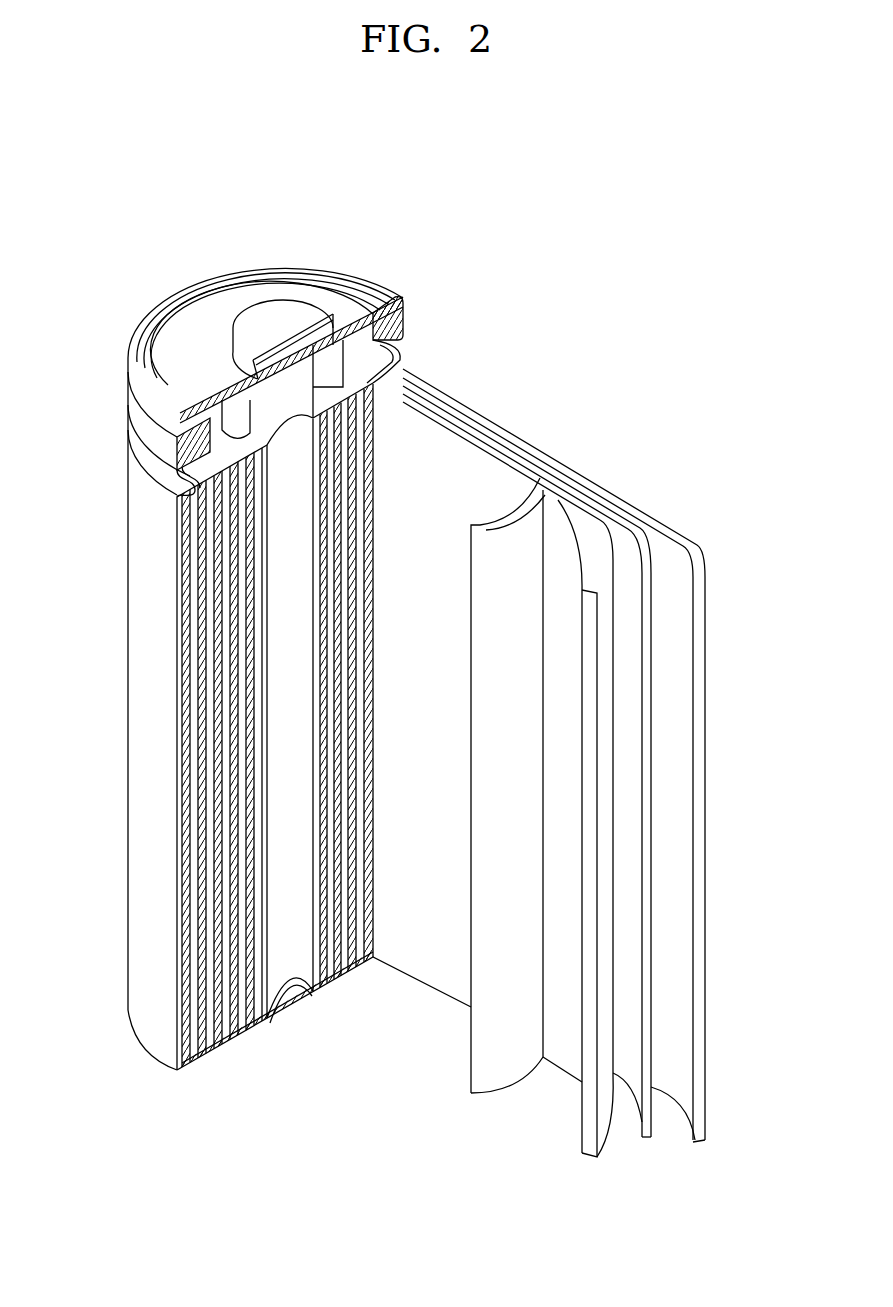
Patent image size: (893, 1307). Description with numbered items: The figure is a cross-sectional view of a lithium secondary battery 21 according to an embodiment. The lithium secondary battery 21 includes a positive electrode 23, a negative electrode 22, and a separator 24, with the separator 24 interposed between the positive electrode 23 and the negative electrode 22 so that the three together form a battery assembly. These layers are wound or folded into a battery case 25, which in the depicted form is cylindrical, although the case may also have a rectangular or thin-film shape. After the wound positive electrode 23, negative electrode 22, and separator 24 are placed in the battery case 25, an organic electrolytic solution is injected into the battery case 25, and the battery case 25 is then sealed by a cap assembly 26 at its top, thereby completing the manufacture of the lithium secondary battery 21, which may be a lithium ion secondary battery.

The lithium secondary battery 21 is at (595, 296).
The negative electrode 22 is at (688, 552).
The positive electrode 23 is at (570, 503).
The separator 24 is at (507, 530).
The battery case 25 is at (142, 718).
The cap assembly 26 is at (262, 312).